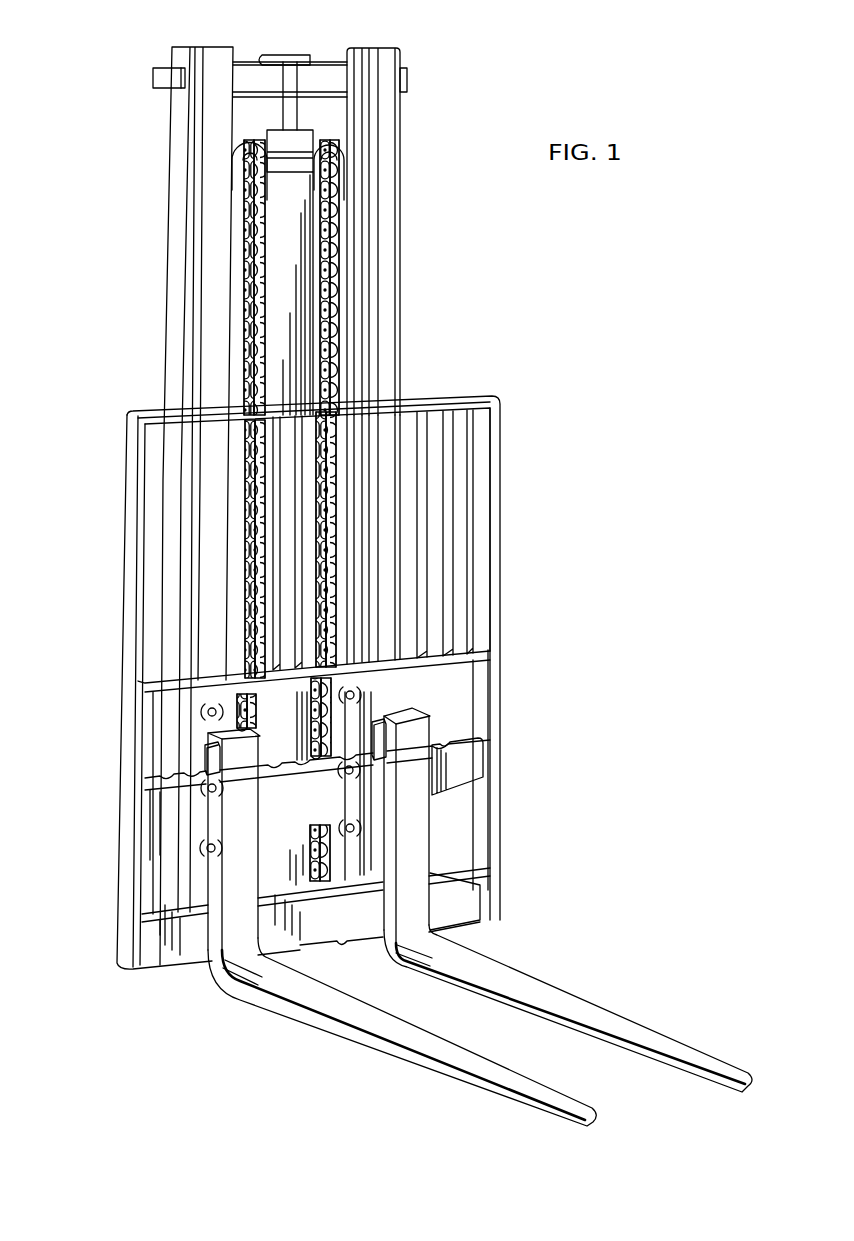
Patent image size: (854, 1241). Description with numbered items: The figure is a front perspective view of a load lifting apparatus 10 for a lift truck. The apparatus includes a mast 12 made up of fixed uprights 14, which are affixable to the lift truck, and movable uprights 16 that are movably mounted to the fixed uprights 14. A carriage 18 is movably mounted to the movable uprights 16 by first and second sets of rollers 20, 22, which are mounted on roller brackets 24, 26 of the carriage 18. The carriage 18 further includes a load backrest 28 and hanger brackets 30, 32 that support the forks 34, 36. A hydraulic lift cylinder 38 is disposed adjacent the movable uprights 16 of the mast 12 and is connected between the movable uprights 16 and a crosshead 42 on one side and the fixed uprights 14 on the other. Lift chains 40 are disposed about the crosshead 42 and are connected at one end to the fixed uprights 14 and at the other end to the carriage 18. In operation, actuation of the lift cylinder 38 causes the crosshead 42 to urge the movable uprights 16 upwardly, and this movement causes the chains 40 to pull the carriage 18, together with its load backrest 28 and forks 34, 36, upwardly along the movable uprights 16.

The load lifting apparatus 10 is at (128, 160).
The mast 12 is at (158, 301).
The fixed uprights 14 is at (401, 53).
The movable uprights 16 is at (347, 47).
The carriage 18 is at (122, 570).
The first set of rollers 20 is at (205, 845).
The second set of rollers 22 is at (355, 828).
The roller bracket 24 is at (273, 852).
The roller bracket 26 is at (350, 862).
The load backrest 28 is at (483, 437).
The hanger bracket 30 is at (468, 765).
The hanger bracket 32 is at (470, 898).
The fork 34 is at (338, 1008).
The fork 36 is at (612, 1025).
The hydraulic lift cylinder 38 is at (283, 305).
The lift chains 40 is at (332, 232).
The crosshead 42 is at (302, 141).